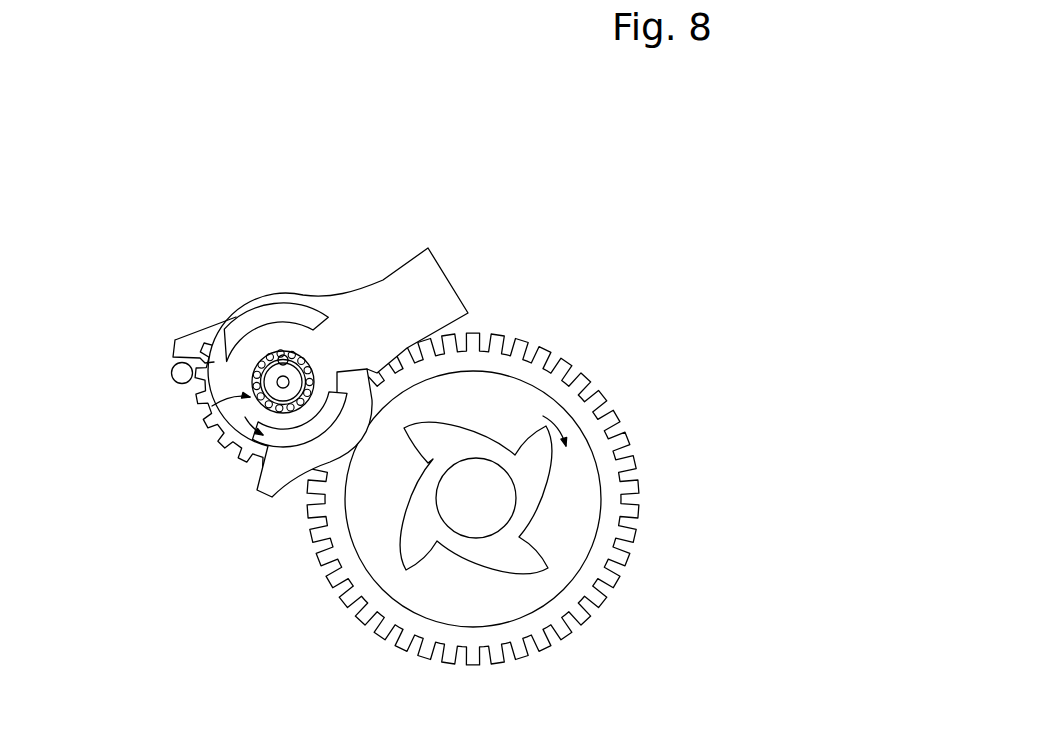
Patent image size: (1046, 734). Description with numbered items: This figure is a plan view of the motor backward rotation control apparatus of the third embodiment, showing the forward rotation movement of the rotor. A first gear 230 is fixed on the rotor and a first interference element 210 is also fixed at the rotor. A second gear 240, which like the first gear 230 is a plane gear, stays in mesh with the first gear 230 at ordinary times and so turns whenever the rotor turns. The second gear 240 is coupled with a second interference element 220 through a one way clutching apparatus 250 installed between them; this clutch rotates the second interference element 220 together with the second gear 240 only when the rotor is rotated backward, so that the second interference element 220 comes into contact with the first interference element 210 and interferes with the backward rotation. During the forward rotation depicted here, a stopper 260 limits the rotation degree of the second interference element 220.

The first interference element 210 is at (527, 437).
The second interference element 220 is at (388, 305).
The first gear 230 is at (604, 390).
The second gear 240 is at (238, 458).
The one way clutching apparatus 250 is at (222, 397).
The stopper 260 is at (182, 373).